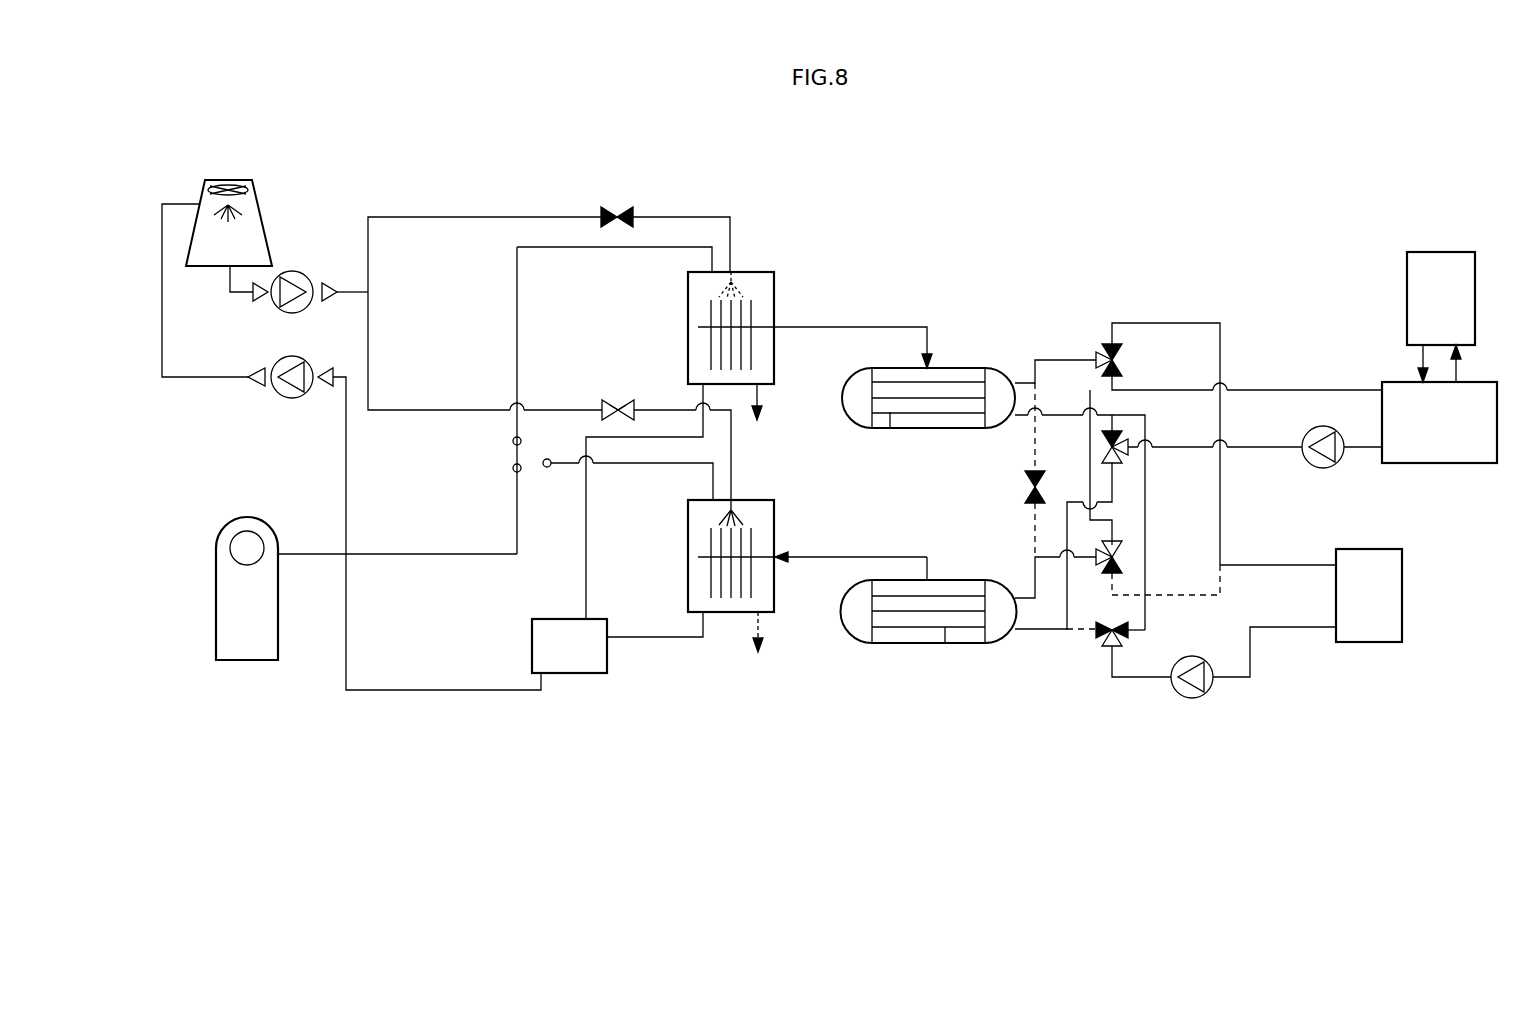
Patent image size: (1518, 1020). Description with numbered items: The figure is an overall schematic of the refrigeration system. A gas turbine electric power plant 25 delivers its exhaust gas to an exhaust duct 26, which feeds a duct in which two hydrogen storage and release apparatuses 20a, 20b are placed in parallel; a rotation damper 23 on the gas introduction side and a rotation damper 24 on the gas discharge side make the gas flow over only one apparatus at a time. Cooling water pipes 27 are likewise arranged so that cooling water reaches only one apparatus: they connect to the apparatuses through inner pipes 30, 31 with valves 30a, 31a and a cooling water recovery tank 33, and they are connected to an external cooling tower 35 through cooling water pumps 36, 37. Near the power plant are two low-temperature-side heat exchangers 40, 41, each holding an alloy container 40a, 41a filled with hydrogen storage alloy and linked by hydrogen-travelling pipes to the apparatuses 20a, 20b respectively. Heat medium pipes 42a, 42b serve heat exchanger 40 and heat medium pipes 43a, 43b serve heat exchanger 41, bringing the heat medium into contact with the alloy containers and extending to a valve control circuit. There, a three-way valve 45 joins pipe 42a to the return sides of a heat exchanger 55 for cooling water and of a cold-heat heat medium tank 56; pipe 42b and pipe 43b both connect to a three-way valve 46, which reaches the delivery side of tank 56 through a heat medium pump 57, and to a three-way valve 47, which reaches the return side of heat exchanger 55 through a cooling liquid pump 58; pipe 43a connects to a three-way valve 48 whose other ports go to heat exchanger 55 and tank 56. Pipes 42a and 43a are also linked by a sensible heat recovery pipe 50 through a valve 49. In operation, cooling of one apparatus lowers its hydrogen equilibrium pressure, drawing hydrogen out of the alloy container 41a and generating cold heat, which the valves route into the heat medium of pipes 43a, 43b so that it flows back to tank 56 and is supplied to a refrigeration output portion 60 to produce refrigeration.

The hydrogen storage and release apparatus 20a is at (755, 270).
The hydrogen storage and release apparatus 20b is at (770, 498).
The rotation damper 23 is at (525, 455).
The rotation damper 24 is at (608, 501).
The gas turbine electric power plant 25 is at (215, 608).
The exhaust duct 26 is at (316, 552).
The cooling water pipes 27 is at (237, 295).
The inner pipe 30 is at (437, 215).
The valve 30a is at (612, 206).
The inner pipe 31 is at (395, 412).
The valve 31a is at (617, 400).
The cooling water recovery tank 33 is at (530, 637).
The cooling tower 35 is at (228, 178).
The cooling water pump 36 is at (300, 271).
The cooling water pump 37 is at (292, 398).
The low-temperature-side heat exchanger 40 is at (963, 368).
The alloy container 40a is at (890, 415).
The low-temperature-side heat exchanger 41 is at (890, 645).
The alloy container 41a is at (945, 628).
The heat medium pipe 42a is at (1052, 358).
The heat medium pipe 42b is at (1023, 425).
The heat medium pipe 43a is at (1035, 582).
The heat medium pipe 43b is at (1030, 632).
The three-way valve 45 is at (1108, 343).
The three-way valve 46 is at (1128, 452).
The three-way valve 47 is at (1108, 648).
The three-way valve 48 is at (1122, 555).
The valve 49 is at (1027, 489).
The sensible heat recovery pipe 50 is at (1025, 452).
The heat exchanger 55 is at (1403, 590).
The cold-heat heat medium tank 56 is at (1477, 465).
The heat medium pump 57 is at (1320, 468).
The cooling liquid pump 58 is at (1205, 695).
The refrigeration output portion 60 is at (1435, 250).